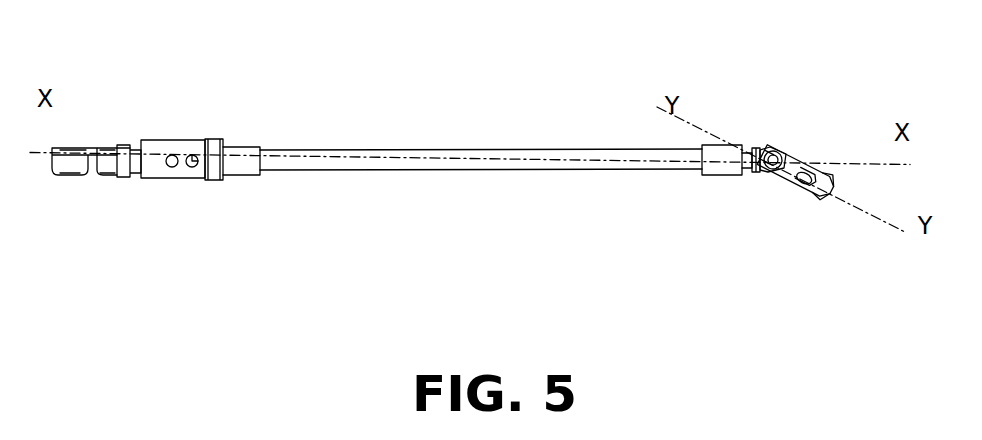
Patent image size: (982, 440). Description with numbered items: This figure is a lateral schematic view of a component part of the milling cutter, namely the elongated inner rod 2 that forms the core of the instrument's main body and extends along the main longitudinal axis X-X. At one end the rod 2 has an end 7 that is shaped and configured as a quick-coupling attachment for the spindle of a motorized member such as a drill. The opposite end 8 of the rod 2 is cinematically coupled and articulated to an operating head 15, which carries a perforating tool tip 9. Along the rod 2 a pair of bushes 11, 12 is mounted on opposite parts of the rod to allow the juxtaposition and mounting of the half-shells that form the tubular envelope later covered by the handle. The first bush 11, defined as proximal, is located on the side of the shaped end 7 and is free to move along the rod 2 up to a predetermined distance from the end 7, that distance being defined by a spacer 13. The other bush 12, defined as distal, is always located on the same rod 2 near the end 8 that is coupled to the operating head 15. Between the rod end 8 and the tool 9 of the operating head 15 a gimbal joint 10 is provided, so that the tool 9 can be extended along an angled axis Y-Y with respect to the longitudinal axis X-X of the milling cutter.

The inner rod 2 is at (417, 148).
The end 7 is at (63, 152).
The opposite end 8 is at (757, 170).
The perforating tool tip 9 is at (812, 183).
The gimbal joint 10 is at (776, 135).
The first bush 11 is at (240, 152).
The other bush 12 is at (700, 148).
The spacer 13 is at (153, 152).
The operating head 15 is at (773, 212).